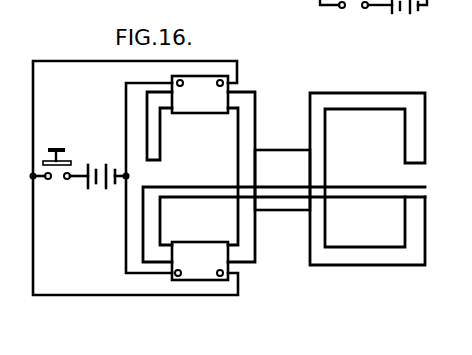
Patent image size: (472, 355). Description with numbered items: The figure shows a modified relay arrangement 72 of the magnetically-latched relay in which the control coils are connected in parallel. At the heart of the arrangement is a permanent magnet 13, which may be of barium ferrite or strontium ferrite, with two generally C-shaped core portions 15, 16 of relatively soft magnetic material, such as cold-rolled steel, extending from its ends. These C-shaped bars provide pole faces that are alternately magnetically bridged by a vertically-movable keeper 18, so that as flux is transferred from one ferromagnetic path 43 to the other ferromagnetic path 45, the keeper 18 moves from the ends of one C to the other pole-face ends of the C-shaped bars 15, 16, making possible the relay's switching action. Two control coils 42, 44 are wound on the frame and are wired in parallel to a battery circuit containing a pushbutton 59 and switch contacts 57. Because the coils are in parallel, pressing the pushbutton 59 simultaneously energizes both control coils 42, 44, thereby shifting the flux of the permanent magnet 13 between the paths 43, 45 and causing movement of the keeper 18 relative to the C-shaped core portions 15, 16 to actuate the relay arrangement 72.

The permanent magnet 13 is at (287, 150).
The C-shaped core portion 15 is at (162, 149).
The C-shaped core portion 16 is at (465, 143).
The keeper 18 is at (236, 172).
The control coil 42 is at (210, 107).
The ferromagnetic path 43 is at (396, 100).
The control coil 44 is at (192, 248).
The ferromagnetic path 45 is at (245, 257).
The switch contacts 57 is at (353, 8).
The pushbutton 59 is at (66, 161).
The relay arrangement 72 is at (294, 91).